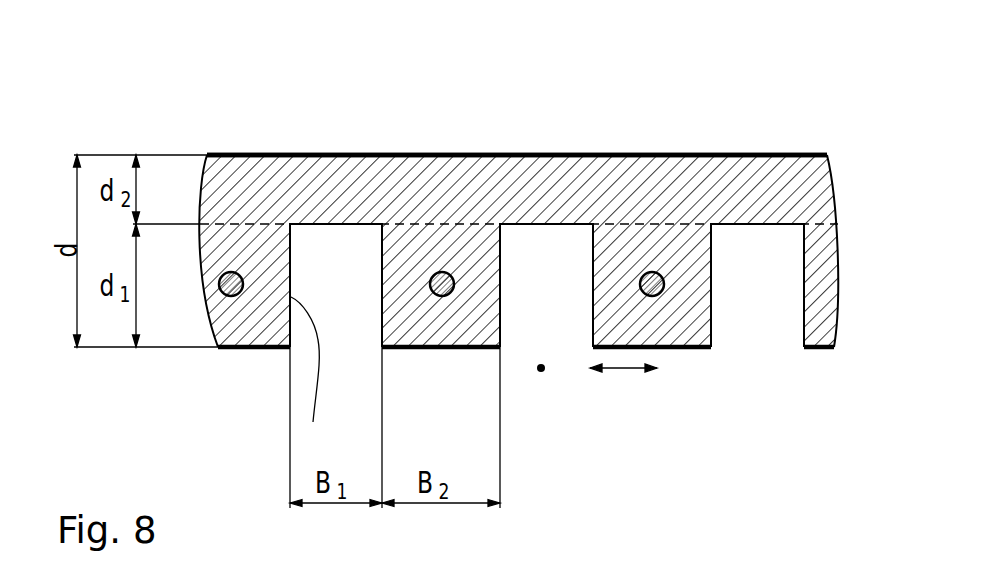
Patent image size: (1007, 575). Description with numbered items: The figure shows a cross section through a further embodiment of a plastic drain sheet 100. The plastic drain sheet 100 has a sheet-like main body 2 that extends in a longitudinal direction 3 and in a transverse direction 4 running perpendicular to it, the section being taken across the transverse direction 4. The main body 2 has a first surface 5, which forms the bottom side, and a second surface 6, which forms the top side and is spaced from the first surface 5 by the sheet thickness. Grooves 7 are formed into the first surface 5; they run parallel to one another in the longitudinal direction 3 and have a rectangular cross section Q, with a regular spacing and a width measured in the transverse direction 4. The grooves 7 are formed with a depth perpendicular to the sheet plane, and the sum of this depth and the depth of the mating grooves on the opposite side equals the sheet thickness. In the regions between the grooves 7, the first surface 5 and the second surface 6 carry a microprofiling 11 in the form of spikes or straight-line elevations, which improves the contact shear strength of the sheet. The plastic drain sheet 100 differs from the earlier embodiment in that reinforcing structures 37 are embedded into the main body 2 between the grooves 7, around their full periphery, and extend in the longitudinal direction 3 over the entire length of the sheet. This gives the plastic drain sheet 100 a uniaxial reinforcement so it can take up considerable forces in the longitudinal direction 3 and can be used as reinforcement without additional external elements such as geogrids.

The plastic drain sheet 100 is at (350, 132).
The sheet-like main body 2 is at (233, 348).
The longitudinal direction 3 is at (541, 372).
The transverse direction 4 is at (627, 370).
The first surface 5 is at (682, 348).
The second surface 6 is at (648, 155).
The grooves 7 is at (353, 280).
The microprofiling 11 is at (483, 153).
The reinforcing structures 37 is at (232, 272).
The cross section Q is at (306, 377).